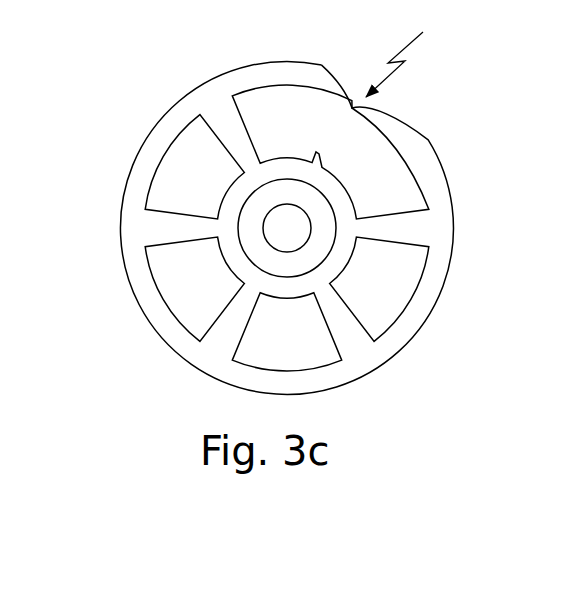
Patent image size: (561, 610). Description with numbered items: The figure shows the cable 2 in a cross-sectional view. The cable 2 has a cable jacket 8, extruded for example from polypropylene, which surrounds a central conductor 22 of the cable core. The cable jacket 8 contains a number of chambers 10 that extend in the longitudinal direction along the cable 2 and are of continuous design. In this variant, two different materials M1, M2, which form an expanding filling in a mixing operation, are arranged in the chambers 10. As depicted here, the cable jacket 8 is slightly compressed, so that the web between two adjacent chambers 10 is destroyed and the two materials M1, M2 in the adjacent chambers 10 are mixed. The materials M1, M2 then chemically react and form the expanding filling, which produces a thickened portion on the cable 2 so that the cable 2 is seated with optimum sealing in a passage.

The cable 2 is at (125, 66).
The cable jacket 8 is at (136, 149).
The chambers 10 is at (287, 228).
The conductor 22 is at (287, 228).
The first material M1 is at (287, 98).
The second material M2 is at (396, 150).